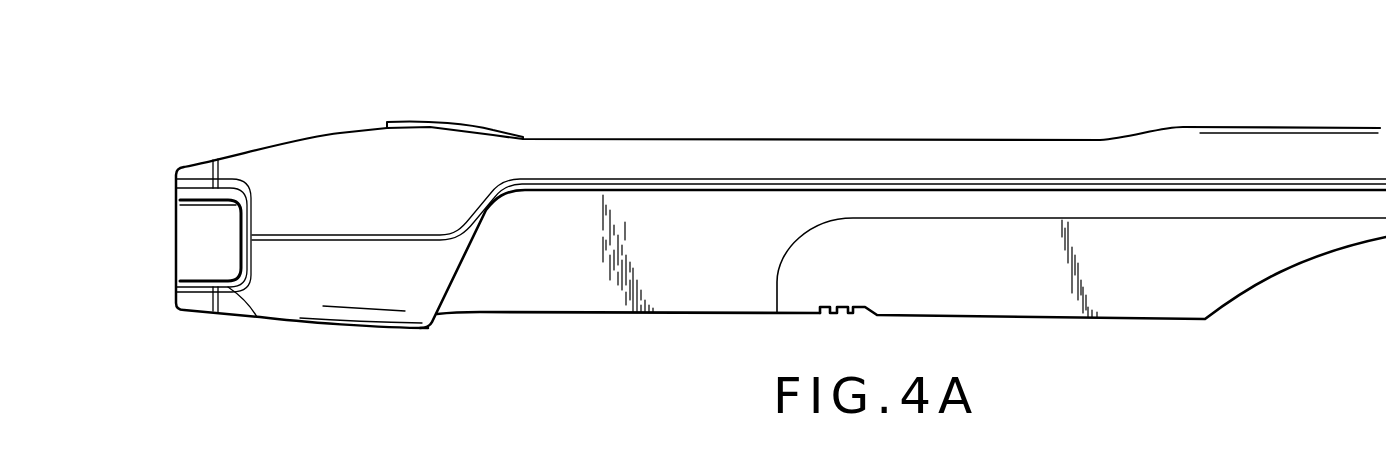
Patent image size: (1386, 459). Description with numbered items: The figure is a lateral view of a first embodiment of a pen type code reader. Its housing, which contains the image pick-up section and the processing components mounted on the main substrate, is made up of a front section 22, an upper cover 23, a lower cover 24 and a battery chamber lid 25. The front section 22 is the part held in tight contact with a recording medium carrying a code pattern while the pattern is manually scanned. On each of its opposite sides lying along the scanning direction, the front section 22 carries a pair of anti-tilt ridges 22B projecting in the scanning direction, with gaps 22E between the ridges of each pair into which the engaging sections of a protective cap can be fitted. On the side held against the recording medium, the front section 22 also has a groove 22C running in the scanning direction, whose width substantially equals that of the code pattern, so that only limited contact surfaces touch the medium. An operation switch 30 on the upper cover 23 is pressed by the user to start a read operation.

The front section 22 is at (188, 217).
The anti-tilt ridges 22B is at (226, 194).
The groove 22C is at (165, 251).
The gaps 22E is at (197, 257).
The upper cover 23 is at (823, 153).
The lower cover 24 is at (683, 300).
The battery chamber lid 25 is at (1060, 305).
The operation switch 30 is at (438, 122).